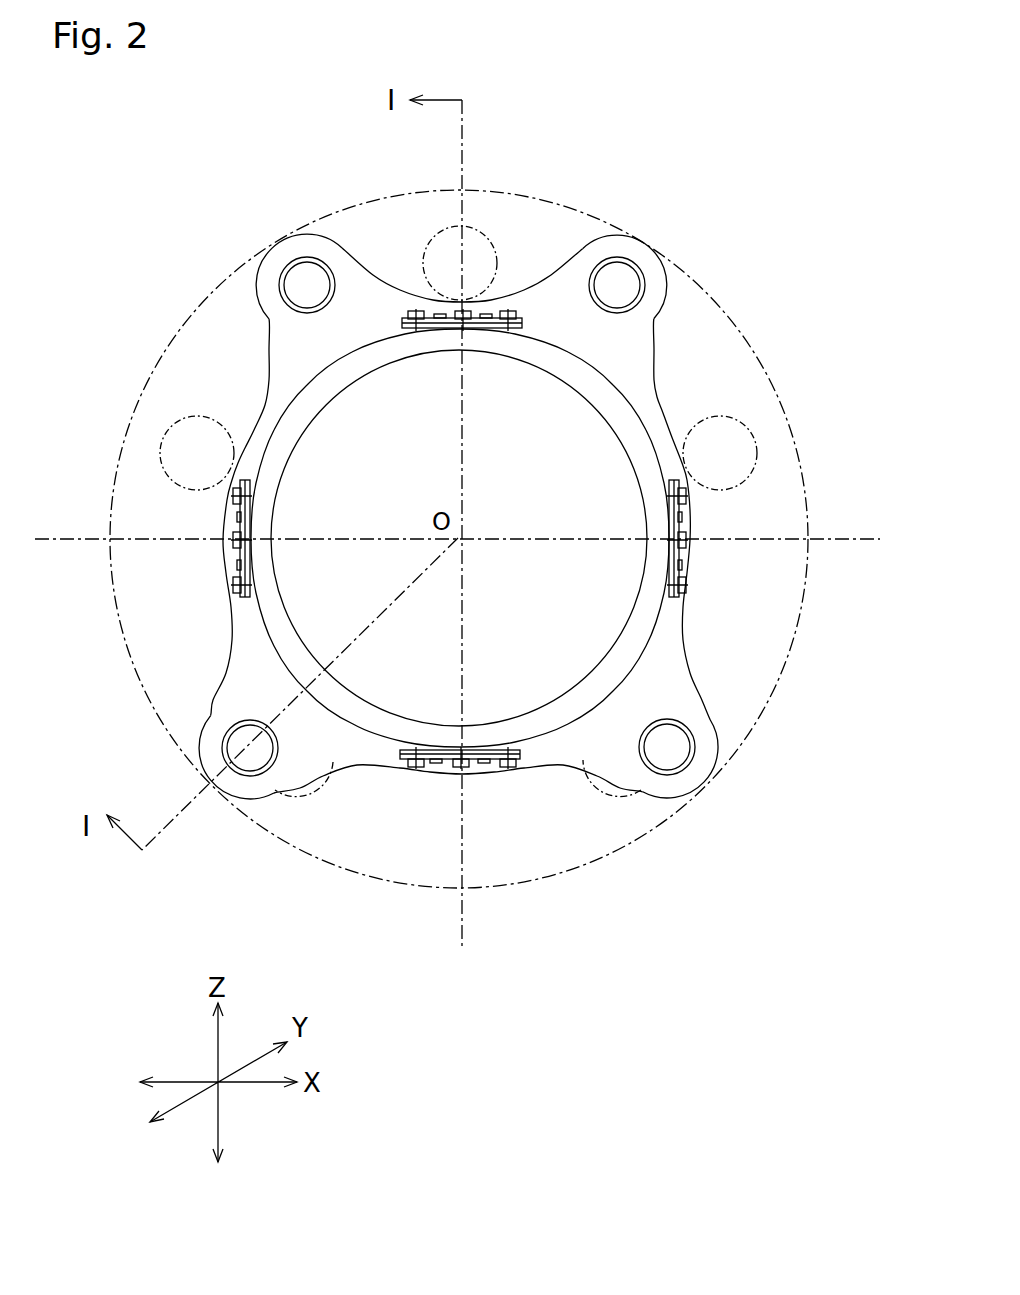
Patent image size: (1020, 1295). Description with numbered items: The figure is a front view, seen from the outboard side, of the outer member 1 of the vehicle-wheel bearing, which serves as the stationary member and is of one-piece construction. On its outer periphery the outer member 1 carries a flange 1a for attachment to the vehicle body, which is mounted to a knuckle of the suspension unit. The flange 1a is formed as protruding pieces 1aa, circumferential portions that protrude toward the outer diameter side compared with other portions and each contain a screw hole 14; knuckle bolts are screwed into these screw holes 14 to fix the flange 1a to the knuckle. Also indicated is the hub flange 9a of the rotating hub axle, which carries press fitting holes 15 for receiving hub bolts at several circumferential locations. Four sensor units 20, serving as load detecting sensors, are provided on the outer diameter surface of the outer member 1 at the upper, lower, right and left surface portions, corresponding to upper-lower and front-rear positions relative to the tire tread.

The outer member 1 is at (727, 375).
The flange for attachment to a vehicle body 1a is at (727, 512).
The protruding piece 1aa is at (343, 246).
The hub flange 9a is at (207, 291).
The screw holes 14 is at (300, 305).
The press fitting holes 15 is at (428, 222).
The sensor units 20 is at (480, 338).